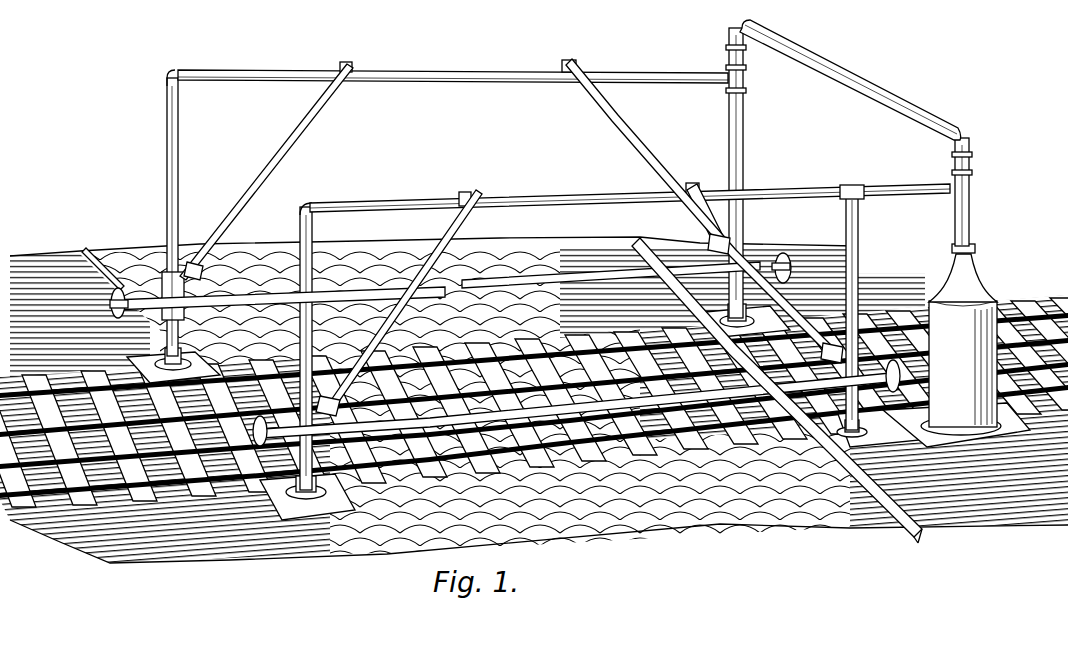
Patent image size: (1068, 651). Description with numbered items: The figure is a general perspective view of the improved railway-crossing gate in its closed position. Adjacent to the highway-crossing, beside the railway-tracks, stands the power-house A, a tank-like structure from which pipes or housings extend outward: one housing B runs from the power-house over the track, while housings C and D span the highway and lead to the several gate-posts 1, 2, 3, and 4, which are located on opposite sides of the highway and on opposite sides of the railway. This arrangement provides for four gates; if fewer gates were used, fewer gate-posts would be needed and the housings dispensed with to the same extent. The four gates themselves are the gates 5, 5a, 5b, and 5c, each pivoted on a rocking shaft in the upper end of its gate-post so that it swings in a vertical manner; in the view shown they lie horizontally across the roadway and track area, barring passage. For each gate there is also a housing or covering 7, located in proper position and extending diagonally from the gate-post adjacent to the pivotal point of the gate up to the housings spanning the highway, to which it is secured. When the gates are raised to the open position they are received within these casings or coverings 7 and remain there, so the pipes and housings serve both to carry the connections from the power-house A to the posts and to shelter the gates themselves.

The gate-post 1 is at (307, 361).
The gate-post 2 is at (173, 226).
The gate-post 3 is at (747, 182).
The gate-post 4 is at (878, 321).
The gate 5 is at (277, 300).
The gate 5a is at (412, 432).
The gate 5b is at (586, 278).
The gate 5c is at (737, 392).
The housing or covering 7 is at (768, 247).
The power-house A is at (956, 292).
The pipe or housing over the track B is at (872, 92).
The pipe or housing over the highway C is at (630, 190).
The pipe or housing over the highway D is at (453, 65).